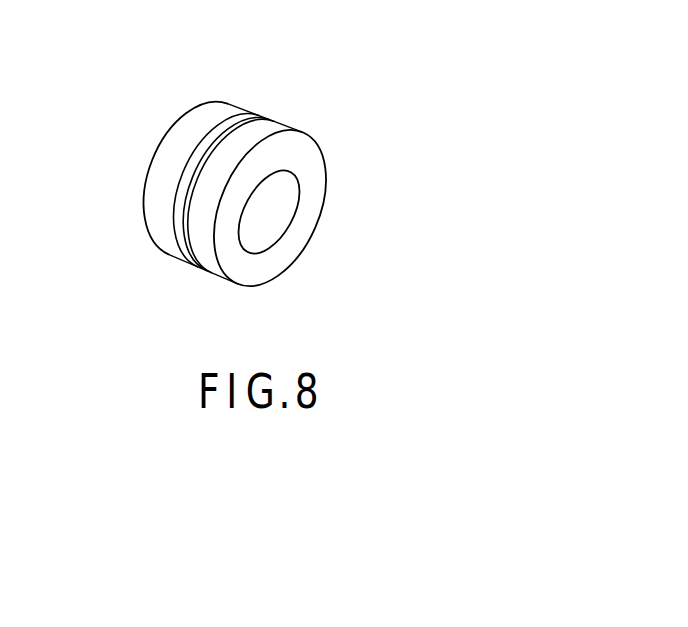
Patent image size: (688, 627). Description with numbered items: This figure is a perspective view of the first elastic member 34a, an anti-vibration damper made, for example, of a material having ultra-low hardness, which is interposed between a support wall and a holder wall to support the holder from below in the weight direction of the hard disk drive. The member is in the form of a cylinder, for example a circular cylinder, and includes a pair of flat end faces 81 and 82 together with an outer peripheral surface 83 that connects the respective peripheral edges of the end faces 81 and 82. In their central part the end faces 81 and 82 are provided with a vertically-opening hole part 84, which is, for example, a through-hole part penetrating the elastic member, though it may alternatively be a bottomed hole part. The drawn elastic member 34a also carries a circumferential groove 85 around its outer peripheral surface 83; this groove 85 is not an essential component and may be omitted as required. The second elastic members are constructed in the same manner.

The first elastic member 34a is at (313, 140).
The end face 81 is at (307, 205).
The end face 82 is at (173, 128).
The outer peripheral surface 83 is at (203, 262).
The hole part 84 is at (267, 237).
The circumferential groove 85 is at (233, 122).